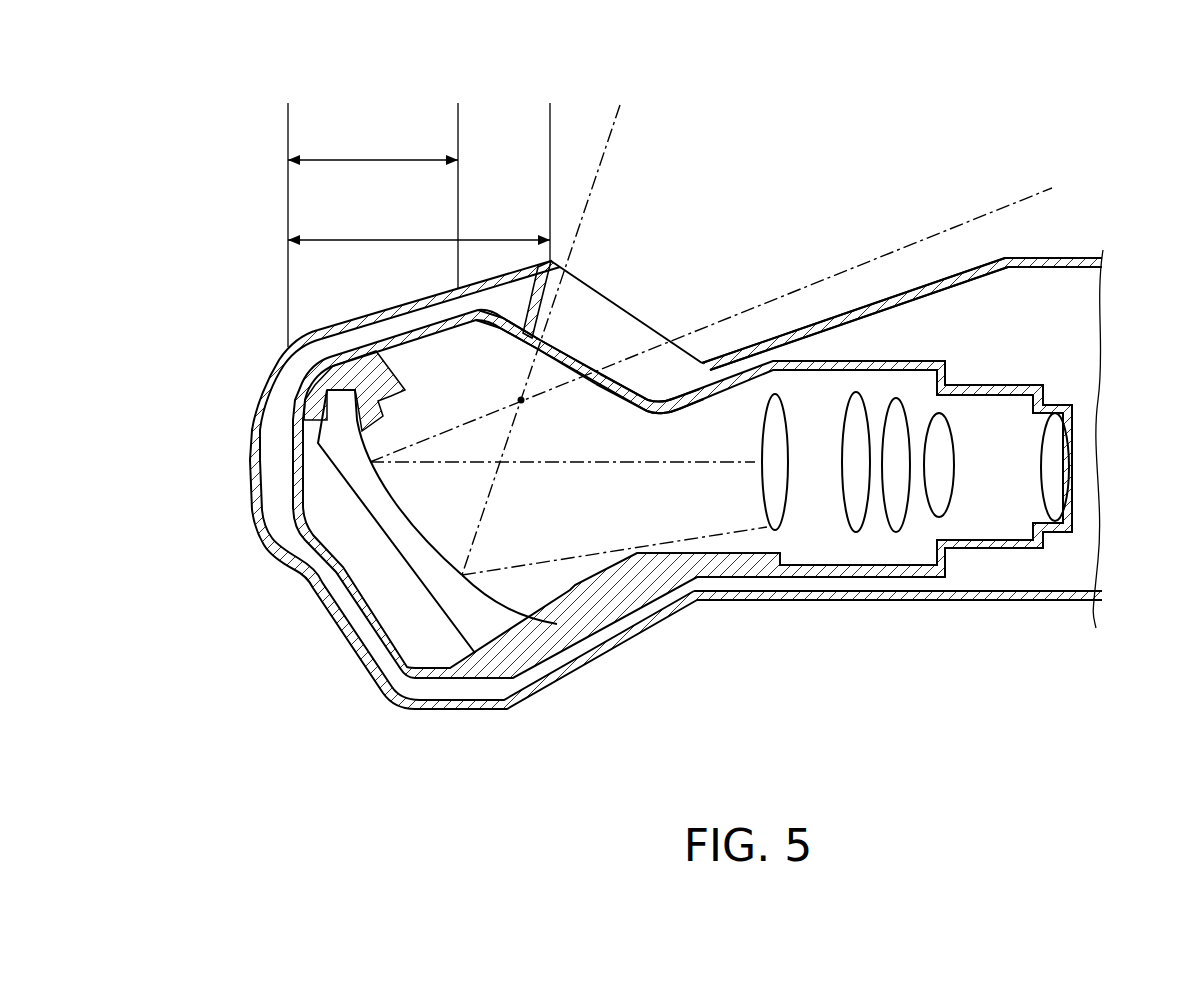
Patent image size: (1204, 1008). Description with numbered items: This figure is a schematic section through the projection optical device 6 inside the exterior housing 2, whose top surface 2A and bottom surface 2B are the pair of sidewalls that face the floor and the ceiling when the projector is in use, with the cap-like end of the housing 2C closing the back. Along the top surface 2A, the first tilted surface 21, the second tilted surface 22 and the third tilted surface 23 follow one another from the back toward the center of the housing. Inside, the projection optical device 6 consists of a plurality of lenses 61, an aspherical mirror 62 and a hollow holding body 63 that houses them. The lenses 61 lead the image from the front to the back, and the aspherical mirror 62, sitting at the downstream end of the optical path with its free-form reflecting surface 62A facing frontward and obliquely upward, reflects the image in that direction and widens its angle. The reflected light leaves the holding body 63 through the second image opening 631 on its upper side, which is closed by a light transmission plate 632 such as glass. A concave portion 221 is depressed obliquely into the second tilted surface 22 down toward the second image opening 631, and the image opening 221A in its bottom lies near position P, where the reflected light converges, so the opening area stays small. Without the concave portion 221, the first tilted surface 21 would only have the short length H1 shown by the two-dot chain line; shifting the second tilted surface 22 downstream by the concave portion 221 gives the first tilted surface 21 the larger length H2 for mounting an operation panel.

The exterior housing 2 is at (898, 423).
The top surface 2A is at (1046, 257).
The bottom surface 2B is at (985, 604).
The distal end cap 2C is at (250, 447).
The projection optical device 6 is at (732, 519).
The first tilted surface 21 is at (345, 322).
The second tilted surface 22 is at (701, 356).
The third tilted surface 23 is at (857, 306).
The concave portion 221 is at (560, 289).
The image opening 221A is at (548, 333).
The lenses 61 is at (939, 520).
The aspherical mirror 62 is at (491, 572).
The reflecting surface 62A is at (523, 607).
The holding body 63 is at (655, 605).
The second image opening 631 is at (601, 380).
The light transmission plate 632 is at (563, 360).
The position P is at (519, 400).
The length dimension H1 is at (345, 160).
The length dimension H2 is at (376, 240).